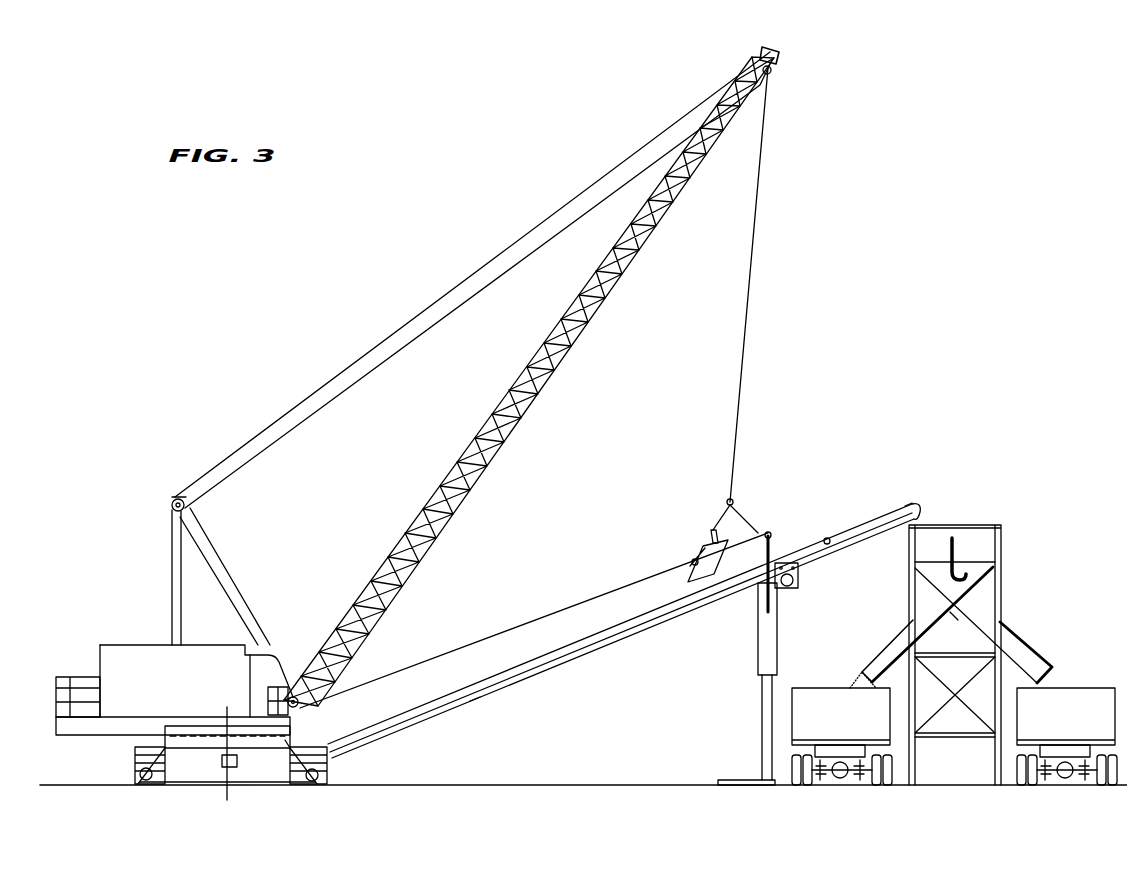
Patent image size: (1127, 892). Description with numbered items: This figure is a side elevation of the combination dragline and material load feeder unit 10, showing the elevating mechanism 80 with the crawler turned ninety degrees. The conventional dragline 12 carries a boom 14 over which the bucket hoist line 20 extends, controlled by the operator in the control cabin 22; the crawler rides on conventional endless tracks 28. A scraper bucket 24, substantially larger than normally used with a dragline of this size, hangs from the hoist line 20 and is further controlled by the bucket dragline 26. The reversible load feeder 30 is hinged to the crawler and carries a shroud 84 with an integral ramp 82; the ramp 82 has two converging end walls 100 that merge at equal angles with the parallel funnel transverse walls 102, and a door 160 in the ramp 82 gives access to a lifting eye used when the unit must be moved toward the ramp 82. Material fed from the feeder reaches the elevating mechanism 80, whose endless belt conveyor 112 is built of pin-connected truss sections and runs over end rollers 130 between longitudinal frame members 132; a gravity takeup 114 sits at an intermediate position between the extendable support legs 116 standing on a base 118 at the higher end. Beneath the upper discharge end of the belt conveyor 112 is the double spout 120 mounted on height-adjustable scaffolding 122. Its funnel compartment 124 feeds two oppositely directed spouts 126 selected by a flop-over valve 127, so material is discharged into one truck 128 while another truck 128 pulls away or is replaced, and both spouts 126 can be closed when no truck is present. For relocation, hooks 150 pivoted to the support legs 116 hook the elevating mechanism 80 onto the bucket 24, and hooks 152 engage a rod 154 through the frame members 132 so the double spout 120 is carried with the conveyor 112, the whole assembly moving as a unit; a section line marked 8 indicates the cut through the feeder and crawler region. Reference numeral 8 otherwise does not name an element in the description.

The section line 8- 8 is at (240, 707).
The combination dragline and material load feeder unit 10 is at (849, 371).
The dragline 12 is at (218, 552).
The boom 14 is at (535, 353).
The bucket hoist line 20 is at (514, 240).
The control cabin 22 is at (283, 687).
The bucket 24 is at (725, 560).
The bucket dragline 26 is at (486, 639).
The endless tracks 28 is at (141, 762).
The reversible load feeder 30 is at (274, 787).
The elevating mechanism 80 is at (690, 611).
The ramp 82 is at (180, 777).
The shroud 84 is at (298, 731).
The converging end walls 100 is at (155, 786).
The funnel transverse walls 102 is at (290, 740).
The belt conveyor 112 is at (783, 548).
The gravity takeup 114 is at (758, 670).
The support legs 116 is at (763, 722).
The base 118 is at (722, 780).
The double spout 120 is at (955, 637).
The scaffolding 122 is at (940, 672).
The funnel compartment 124 is at (975, 535).
The spouts 126 is at (890, 650).
The flop-over valve 127 is at (965, 600).
The truck 128 is at (838, 688).
The end rollers 130 is at (918, 503).
The longitudinal frame members 132 is at (565, 656).
The hooks 150 is at (790, 585).
The hooks 152 is at (950, 551).
The rod 154 is at (828, 538).
The door 160 is at (222, 758).